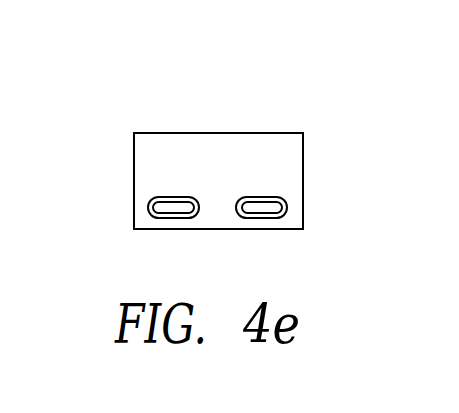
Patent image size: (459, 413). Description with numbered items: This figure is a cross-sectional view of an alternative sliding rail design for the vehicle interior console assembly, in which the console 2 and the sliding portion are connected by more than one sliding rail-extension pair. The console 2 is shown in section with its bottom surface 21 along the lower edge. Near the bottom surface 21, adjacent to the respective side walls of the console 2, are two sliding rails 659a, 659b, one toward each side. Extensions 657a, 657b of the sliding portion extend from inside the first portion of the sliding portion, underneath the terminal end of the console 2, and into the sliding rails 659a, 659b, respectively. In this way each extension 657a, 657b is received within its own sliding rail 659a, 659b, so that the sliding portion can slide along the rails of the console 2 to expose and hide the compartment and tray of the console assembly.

The console 2 is at (153, 157).
The bottom surface 21 is at (218, 230).
The sliding rail 659a is at (277, 197).
The sliding rail 659b is at (167, 201).
The extension 657a is at (276, 208).
The extension 657b is at (160, 207).